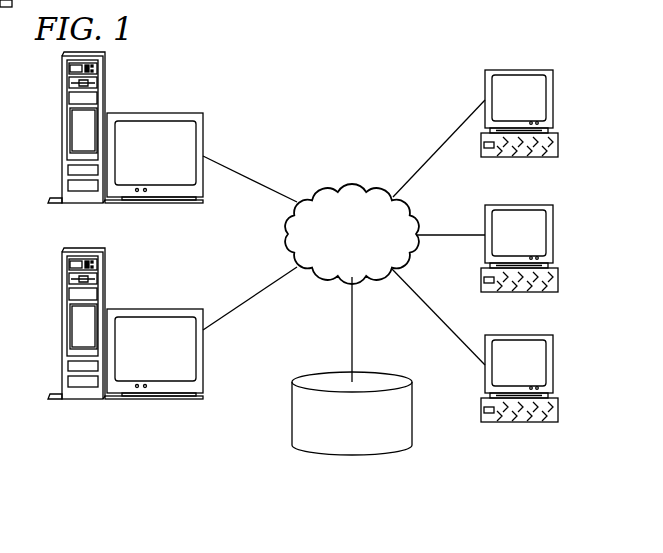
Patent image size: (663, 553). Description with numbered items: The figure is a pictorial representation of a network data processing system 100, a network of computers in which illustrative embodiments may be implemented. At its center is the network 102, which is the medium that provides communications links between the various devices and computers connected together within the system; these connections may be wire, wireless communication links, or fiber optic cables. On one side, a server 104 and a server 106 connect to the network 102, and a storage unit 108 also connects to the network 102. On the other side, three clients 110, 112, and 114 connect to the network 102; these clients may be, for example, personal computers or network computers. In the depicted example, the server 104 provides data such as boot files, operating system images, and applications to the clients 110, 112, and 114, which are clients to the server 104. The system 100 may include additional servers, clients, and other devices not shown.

The network data processing system 100 is at (397, 83).
The network 102 is at (325, 188).
The server 104 is at (62, 128).
The server 106 is at (62, 324).
The storage unit 108 is at (336, 452).
The client 110 is at (555, 99).
The client 112 is at (555, 233).
The client 114 is at (555, 365).